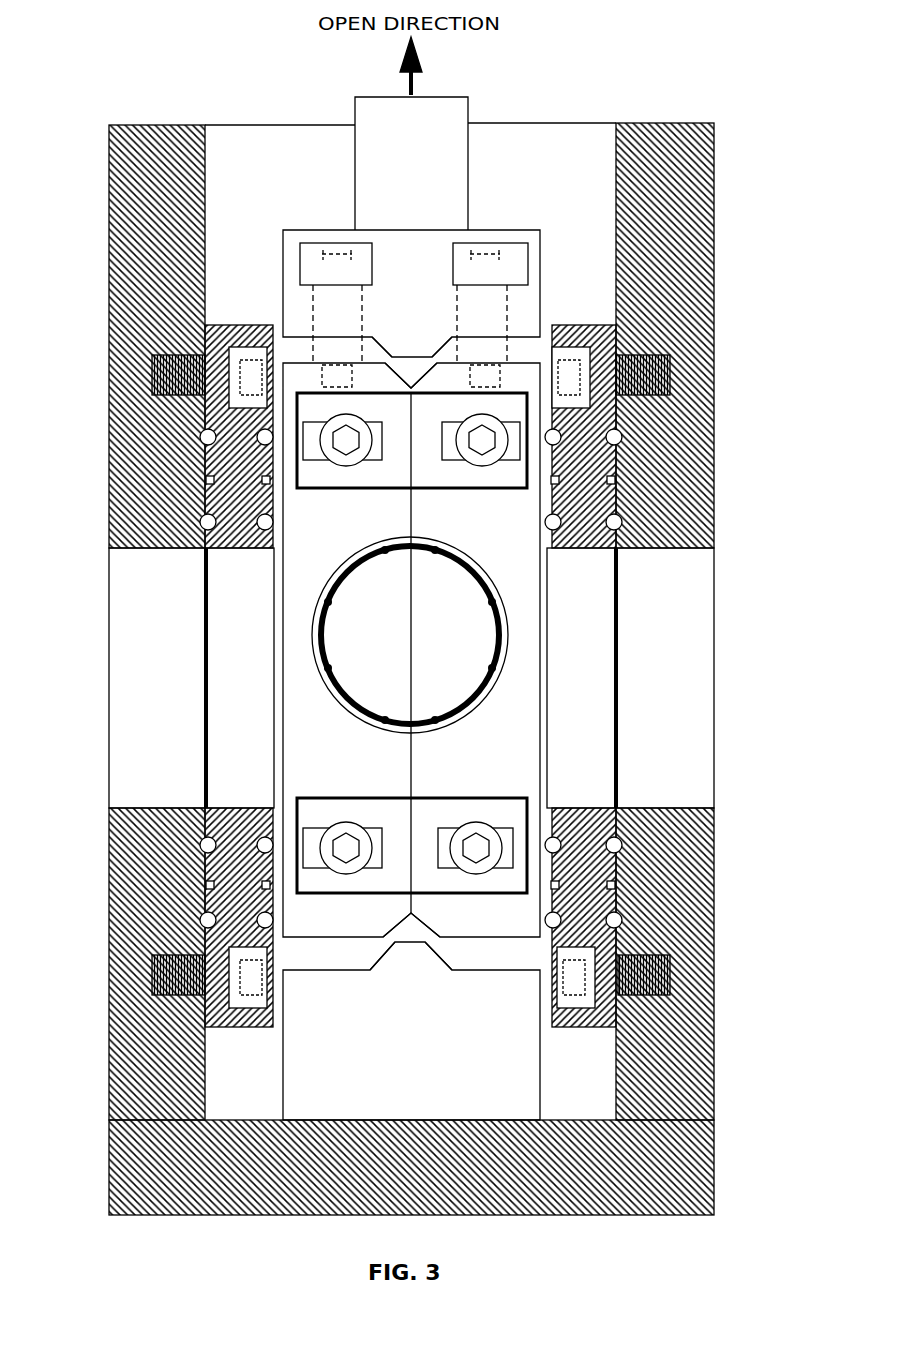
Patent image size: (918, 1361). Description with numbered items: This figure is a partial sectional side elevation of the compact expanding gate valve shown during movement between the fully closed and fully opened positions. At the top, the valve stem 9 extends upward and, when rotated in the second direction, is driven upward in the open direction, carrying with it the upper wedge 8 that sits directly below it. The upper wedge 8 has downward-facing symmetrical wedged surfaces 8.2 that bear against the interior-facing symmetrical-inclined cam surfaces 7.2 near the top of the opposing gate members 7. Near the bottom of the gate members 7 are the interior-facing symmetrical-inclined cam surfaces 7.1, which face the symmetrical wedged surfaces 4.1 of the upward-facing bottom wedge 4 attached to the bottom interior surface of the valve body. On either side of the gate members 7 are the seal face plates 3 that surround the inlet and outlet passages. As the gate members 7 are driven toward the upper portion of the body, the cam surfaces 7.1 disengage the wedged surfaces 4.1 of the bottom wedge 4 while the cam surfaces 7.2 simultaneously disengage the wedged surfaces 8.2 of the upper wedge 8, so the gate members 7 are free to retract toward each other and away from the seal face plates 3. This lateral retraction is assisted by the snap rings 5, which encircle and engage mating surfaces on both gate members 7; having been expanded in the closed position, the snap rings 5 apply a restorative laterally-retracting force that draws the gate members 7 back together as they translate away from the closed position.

The seal face plate 3 is at (235, 325).
The upward-facing bottom wedge 4 is at (540, 1053).
The symmetrical wedged surfaces 4.1 is at (432, 945).
The snap ring 5 is at (506, 677).
The gate member 7 is at (283, 614).
The interior-facing symmetrical-inclined cam surfaces 7.1 is at (400, 915).
The interior-facing symmetrical-inclined cam surfaces 7.2 is at (398, 367).
The upper wedge 8 is at (517, 230).
The symmetrical wedged surfaces 8.2 is at (433, 357).
The valve stem 9 is at (469, 107).